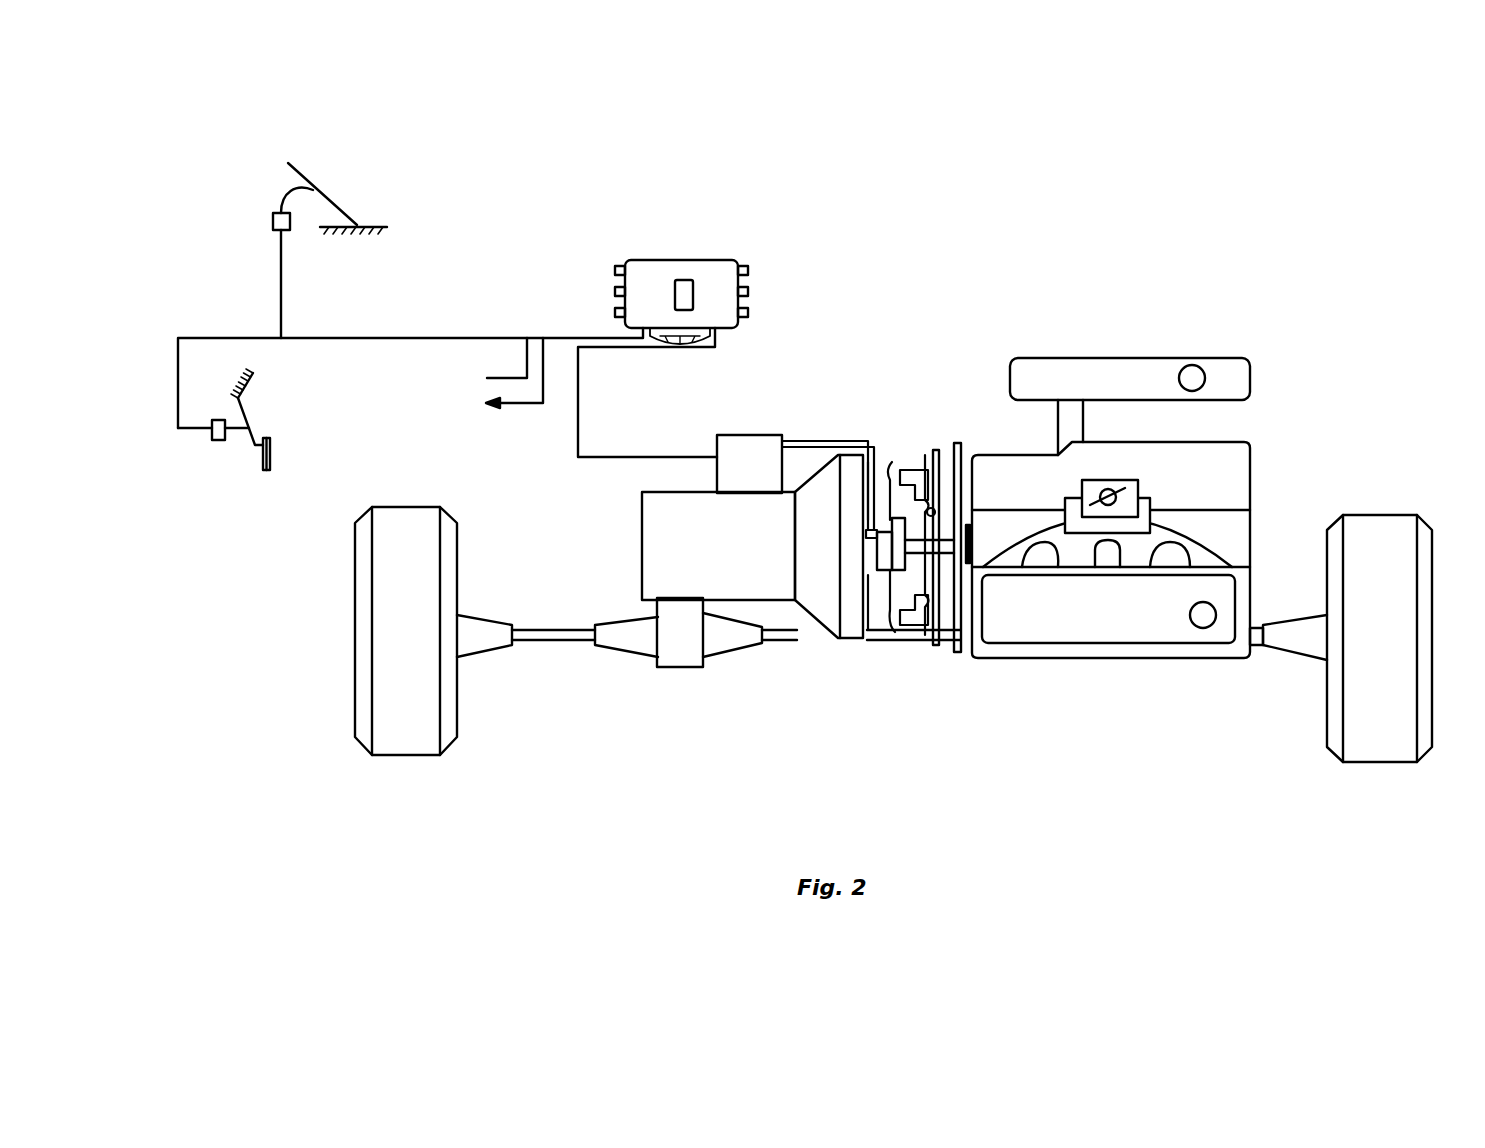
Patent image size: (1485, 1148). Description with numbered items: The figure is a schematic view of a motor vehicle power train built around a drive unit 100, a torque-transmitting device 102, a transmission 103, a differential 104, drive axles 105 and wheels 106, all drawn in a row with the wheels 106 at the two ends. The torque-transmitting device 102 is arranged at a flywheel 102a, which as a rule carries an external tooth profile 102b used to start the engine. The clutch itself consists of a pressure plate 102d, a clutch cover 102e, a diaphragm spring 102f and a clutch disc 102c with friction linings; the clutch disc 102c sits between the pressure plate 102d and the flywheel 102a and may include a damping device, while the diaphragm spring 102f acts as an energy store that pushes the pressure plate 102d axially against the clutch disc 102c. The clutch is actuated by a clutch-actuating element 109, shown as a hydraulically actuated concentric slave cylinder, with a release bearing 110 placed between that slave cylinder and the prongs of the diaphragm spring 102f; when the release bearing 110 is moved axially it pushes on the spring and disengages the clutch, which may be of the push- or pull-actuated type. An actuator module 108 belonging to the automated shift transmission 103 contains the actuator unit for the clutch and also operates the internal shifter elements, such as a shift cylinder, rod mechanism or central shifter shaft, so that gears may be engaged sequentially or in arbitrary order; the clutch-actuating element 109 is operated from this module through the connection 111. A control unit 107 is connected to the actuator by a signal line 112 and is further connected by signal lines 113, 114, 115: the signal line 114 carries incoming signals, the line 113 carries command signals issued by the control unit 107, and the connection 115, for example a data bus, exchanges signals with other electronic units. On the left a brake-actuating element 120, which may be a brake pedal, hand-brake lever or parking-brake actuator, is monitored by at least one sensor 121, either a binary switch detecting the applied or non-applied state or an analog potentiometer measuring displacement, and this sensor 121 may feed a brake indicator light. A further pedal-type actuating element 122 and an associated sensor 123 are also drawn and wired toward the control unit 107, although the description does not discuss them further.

The drive unit 100 is at (1240, 468).
The torque-transmitting device 102 is at (947, 463).
The flywheel 102a is at (943, 635).
The external tooth profile 102b is at (963, 450).
The clutch disc 102c is at (925, 457).
The pressure plate 102d is at (910, 457).
The clutch cover 102e is at (900, 633).
The diaphragm spring 102f is at (880, 532).
The transmission 103 is at (822, 610).
The differential 104 is at (672, 657).
The axle shaft 105 is at (538, 636).
The wheels 106 is at (405, 515).
The control unit 107 is at (710, 262).
The actuator module 108 is at (740, 440).
The clutch-actuating element 109 is at (878, 548).
The release bearing 110 is at (878, 595).
The connection 111 is at (823, 443).
The signal line 112 is at (603, 456).
The signal line 113 is at (525, 406).
The signal line 114 is at (503, 378).
The connection 115 is at (503, 337).
The brake-actuating element 120 is at (277, 450).
The sensor 121 is at (218, 440).
The clutch pedal 122 is at (296, 162).
The clutch pedal sensor 123 is at (272, 220).